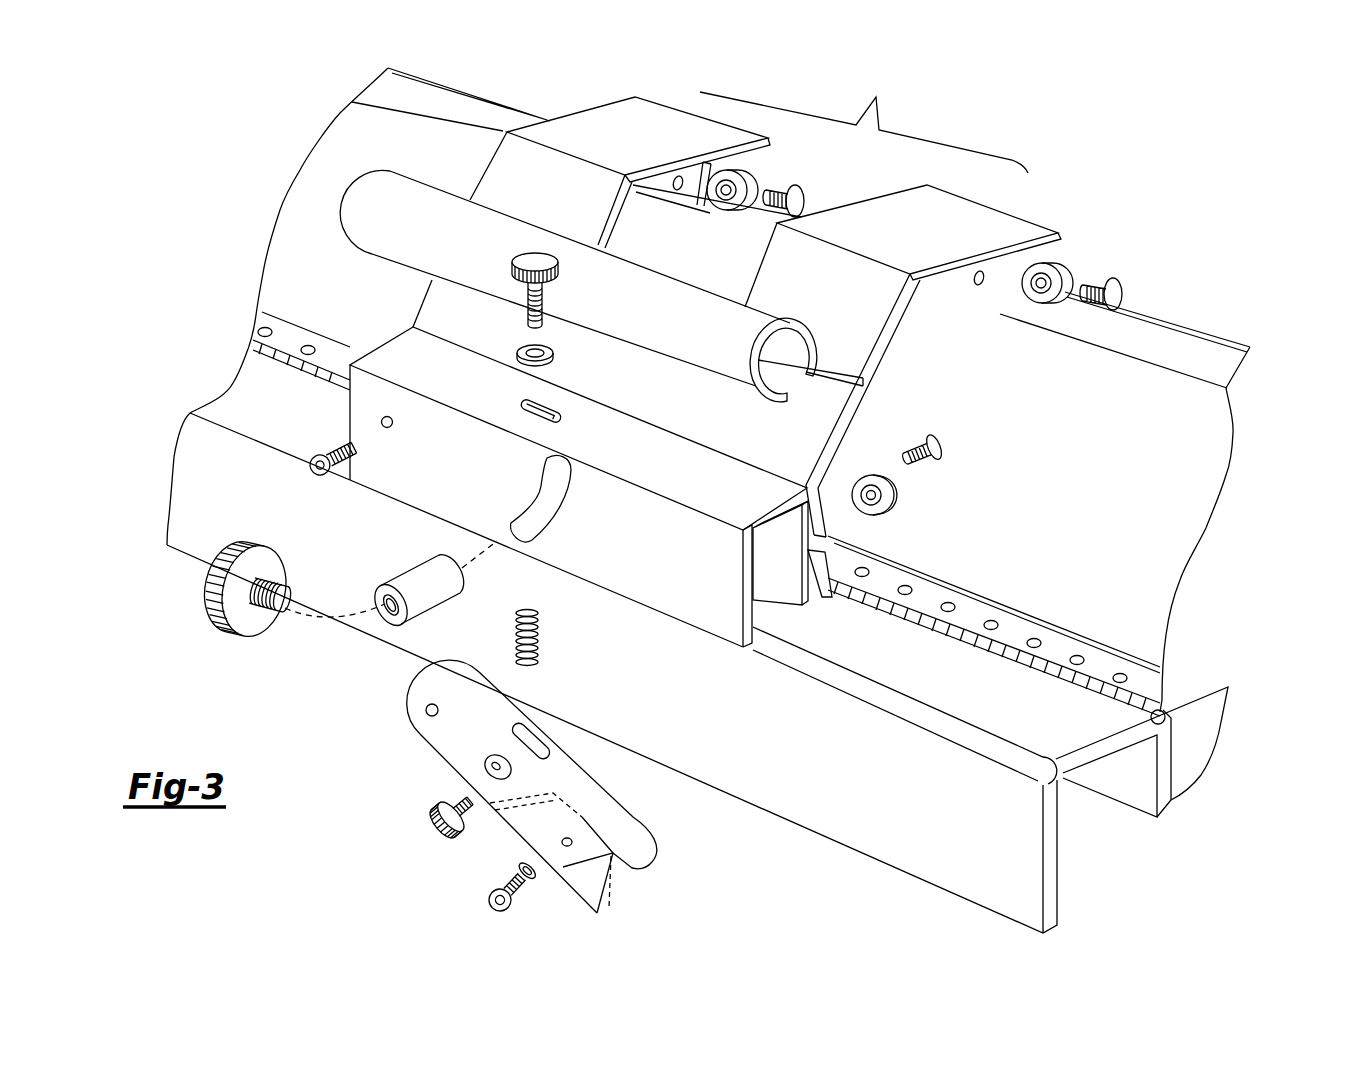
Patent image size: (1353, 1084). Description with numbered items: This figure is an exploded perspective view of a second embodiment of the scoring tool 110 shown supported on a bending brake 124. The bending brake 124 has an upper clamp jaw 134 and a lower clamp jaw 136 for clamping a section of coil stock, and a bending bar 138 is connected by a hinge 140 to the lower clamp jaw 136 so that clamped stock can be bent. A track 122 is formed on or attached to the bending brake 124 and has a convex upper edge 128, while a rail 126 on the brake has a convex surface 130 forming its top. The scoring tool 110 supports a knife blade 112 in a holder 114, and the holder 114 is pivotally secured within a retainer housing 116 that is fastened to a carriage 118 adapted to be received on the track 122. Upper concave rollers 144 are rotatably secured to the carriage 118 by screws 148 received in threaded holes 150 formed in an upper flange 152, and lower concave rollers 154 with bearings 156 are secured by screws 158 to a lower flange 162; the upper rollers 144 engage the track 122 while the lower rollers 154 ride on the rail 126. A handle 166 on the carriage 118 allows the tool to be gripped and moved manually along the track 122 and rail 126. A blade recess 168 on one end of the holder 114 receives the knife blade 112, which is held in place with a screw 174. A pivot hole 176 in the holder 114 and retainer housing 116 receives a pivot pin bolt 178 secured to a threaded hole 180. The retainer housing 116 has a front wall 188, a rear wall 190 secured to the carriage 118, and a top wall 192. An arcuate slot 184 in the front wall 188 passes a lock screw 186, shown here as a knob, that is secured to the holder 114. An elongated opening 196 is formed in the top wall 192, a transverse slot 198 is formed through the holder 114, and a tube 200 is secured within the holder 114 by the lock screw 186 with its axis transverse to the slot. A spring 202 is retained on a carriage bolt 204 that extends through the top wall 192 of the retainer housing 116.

The scoring tool 110 is at (864, 122).
The knife blade 112 is at (598, 903).
The holder 114 is at (630, 822).
The retainer housing 116 is at (700, 620).
The carriage 118 is at (796, 408).
The track 122 is at (1205, 336).
The bending brake 124 is at (1184, 508).
The rail 126 is at (1160, 668).
The convex upper edge 128 is at (1240, 350).
The convex surface 130 is at (990, 607).
The upper clamp jaw 134 is at (300, 178).
The lower clamp jaw 136 is at (1213, 702).
The bending bar 138 is at (1057, 880).
The hinge 140 is at (1084, 682).
The upper concave rollers 144 is at (1062, 268).
The screws 148 is at (1127, 286).
The threaded holes 150 is at (676, 181).
The upper flange 152 is at (718, 163).
The lower concave rollers 154 is at (894, 492).
The bearings 156 is at (876, 506).
The screws 158 is at (950, 446).
The lower flange 162 is at (818, 592).
The handle 166 is at (423, 263).
The blade recess 168 is at (566, 797).
The screw 174 is at (494, 894).
The pivot hole 176 is at (413, 711).
The pivot pin bolt 178 is at (308, 473).
The threaded hole 180 is at (394, 430).
The arcuate slot 184 is at (566, 498).
The lock screw 186 is at (227, 608).
The front wall 188 is at (641, 594).
The rear wall 190 is at (792, 528).
The top wall 192 is at (641, 428).
The elongated opening 196 is at (546, 412).
The transverse slot 198 is at (484, 757).
The tube 200 is at (415, 581).
The spring 202 is at (540, 660).
The carriage bolt 204 is at (548, 262).